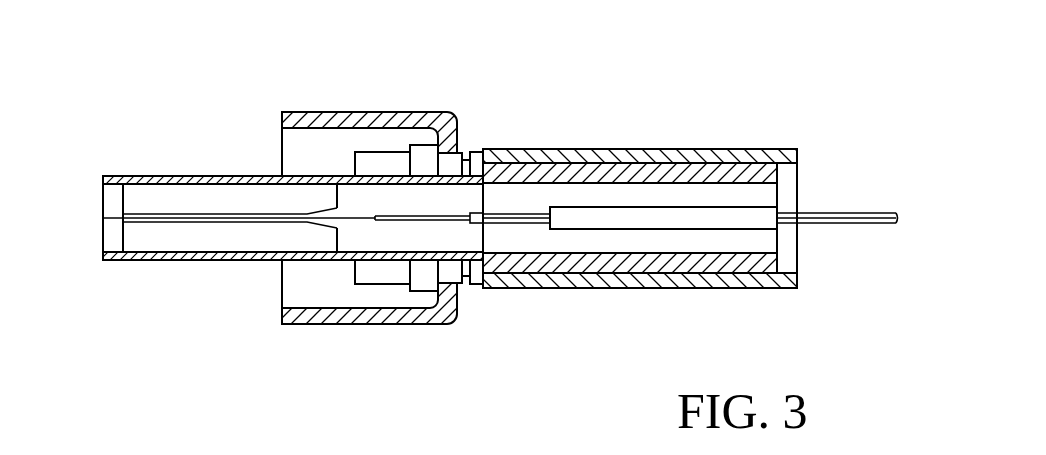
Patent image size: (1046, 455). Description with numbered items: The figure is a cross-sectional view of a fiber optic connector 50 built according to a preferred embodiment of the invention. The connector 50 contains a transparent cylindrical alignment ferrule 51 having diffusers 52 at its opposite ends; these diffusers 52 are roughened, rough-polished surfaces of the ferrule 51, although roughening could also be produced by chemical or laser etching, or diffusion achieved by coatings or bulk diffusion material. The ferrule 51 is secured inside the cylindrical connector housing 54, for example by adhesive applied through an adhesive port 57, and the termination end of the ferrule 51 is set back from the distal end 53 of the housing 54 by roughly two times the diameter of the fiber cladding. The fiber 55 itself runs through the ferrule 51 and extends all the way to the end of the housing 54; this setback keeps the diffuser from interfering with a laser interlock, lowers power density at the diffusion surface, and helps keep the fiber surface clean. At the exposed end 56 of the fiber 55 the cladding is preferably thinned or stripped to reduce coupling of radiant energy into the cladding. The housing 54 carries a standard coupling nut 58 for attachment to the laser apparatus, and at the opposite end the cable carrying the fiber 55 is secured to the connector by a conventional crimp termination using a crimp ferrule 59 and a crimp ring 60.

The connector 50 is at (195, 115).
The alignment ferrule 51 is at (203, 235).
The diffusers 52 is at (123, 215).
The distal end 53 is at (105, 260).
The connector housing 54 is at (145, 176).
The fiber 55 is at (422, 216).
The exposed end 56 is at (110, 222).
The adhesive port 57 is at (233, 176).
The coupling nut 58 is at (353, 112).
The crimp ferrule 59 is at (697, 162).
The crimp ring 60 is at (665, 289).